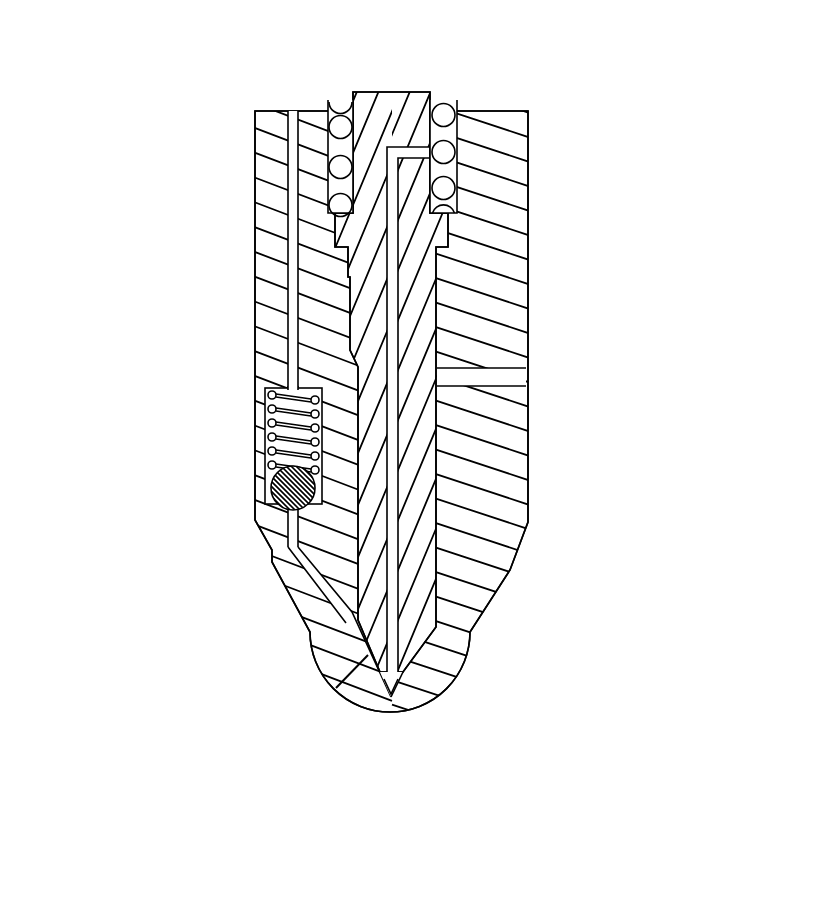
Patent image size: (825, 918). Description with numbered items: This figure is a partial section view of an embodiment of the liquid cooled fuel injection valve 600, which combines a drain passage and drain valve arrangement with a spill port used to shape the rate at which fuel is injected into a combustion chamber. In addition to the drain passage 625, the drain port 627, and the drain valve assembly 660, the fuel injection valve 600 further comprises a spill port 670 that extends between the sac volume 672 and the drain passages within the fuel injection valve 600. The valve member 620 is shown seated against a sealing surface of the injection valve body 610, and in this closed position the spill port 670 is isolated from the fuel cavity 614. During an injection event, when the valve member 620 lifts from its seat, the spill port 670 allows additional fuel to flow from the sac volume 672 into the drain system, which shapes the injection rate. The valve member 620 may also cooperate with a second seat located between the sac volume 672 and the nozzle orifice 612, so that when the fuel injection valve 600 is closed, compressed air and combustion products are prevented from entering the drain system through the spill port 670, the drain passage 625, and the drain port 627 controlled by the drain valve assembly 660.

The liquid cooled fuel injection valve 600 is at (215, 125).
The injection valve body 610 is at (490, 500).
The nozzle orifice 612 is at (338, 687).
The fuel cavity 614 is at (430, 573).
The valve member 620 is at (380, 400).
The drain passage 625 is at (271, 546).
The drain port 627 is at (293, 290).
The drain valve assembly 660 is at (215, 518).
The spill port 670 is at (392, 305).
The sac volume 672 is at (391, 688).